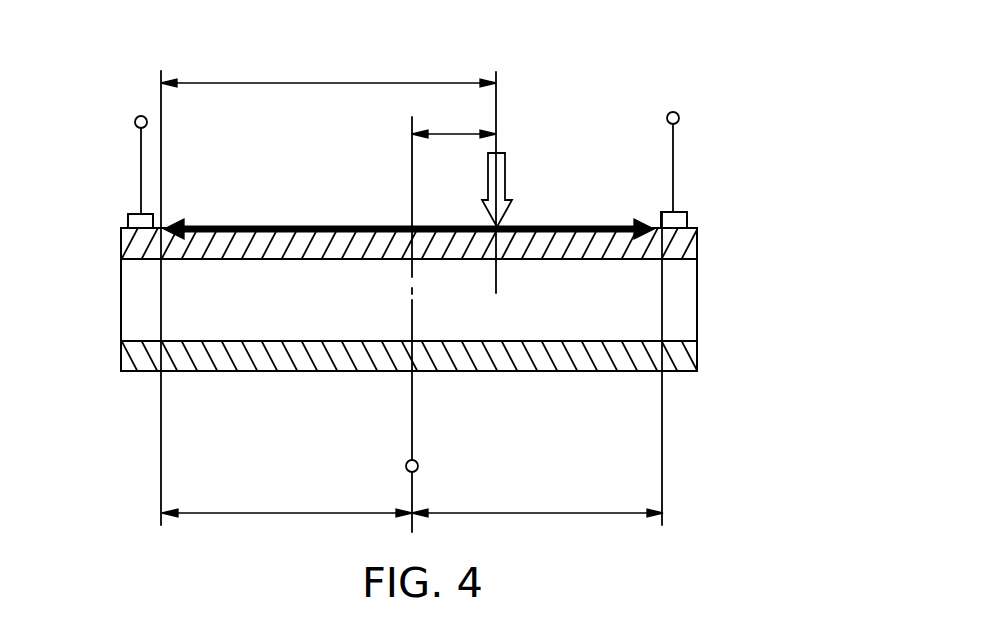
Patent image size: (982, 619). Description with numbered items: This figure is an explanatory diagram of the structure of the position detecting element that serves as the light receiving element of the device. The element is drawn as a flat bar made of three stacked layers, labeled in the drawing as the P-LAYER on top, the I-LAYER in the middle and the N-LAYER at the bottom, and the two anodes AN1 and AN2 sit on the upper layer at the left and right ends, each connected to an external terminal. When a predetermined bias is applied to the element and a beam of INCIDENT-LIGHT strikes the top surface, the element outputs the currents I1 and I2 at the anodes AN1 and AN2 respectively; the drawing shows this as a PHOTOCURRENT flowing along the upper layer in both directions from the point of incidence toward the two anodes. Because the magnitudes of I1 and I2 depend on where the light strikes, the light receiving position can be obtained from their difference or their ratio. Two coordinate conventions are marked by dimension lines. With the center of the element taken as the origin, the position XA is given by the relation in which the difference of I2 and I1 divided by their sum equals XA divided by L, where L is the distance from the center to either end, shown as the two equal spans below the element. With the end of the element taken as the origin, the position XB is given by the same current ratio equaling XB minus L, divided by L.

The anode AN1 is at (128, 217).
The anode AN2 is at (687, 217).
The current I1 is at (140, 153).
The current I2 is at (675, 150).
The P-type semiconductor layer P-LAYER is at (708, 243).
The intrinsic semiconductor layer I-LAYER is at (708, 299).
The N-type semiconductor layer N-LAYER is at (708, 356).
The light receiving position XA is at (452, 133).
The light receiving position XB is at (306, 83).
The length parameter L is at (412, 495).
The photocurrent flow PHOTOCURRENT is at (293, 228).
The incident light INCIDENT-LIGHT is at (493, 184).